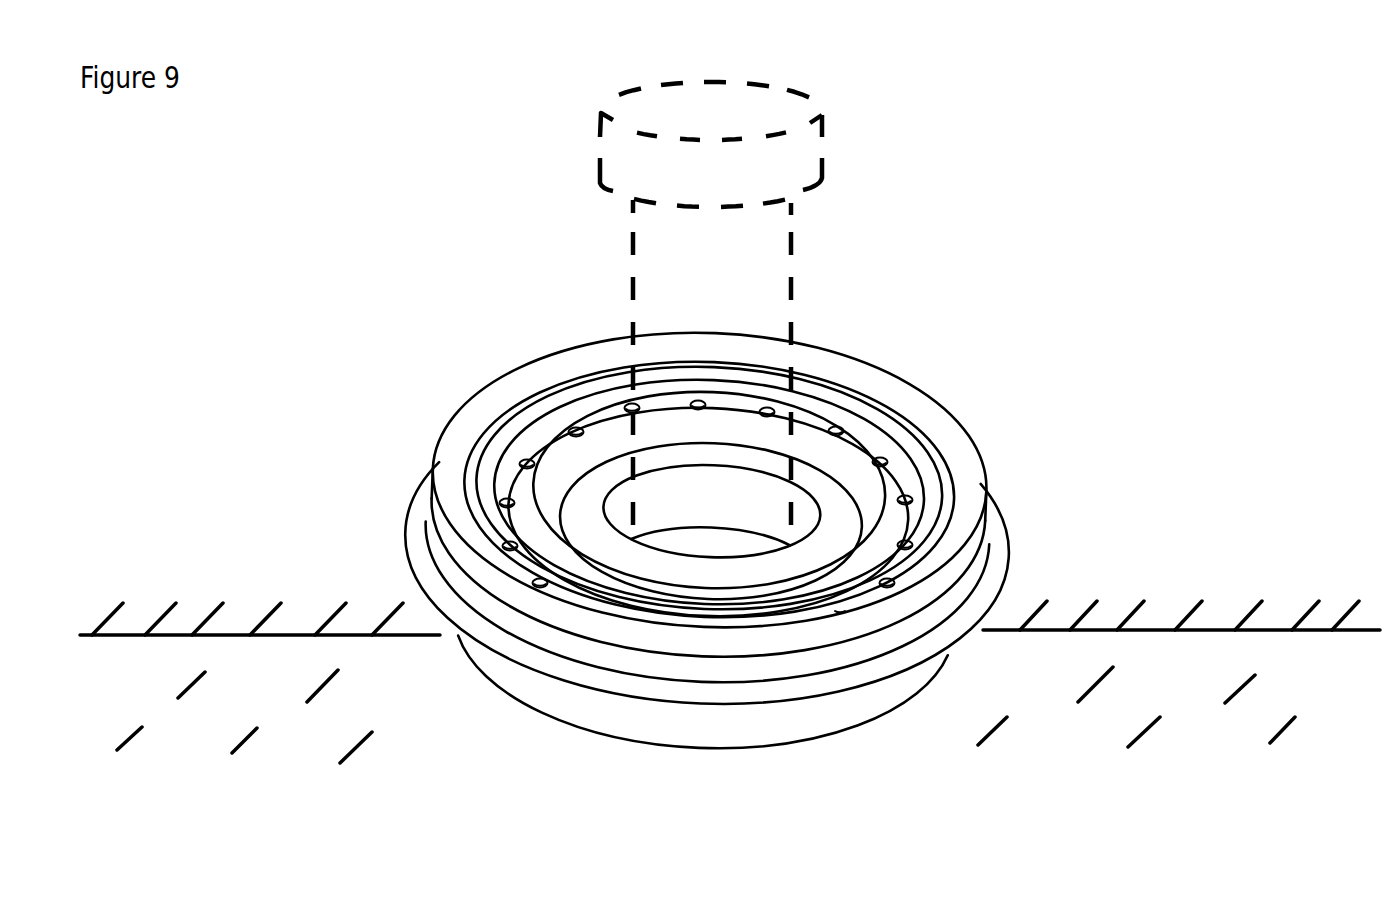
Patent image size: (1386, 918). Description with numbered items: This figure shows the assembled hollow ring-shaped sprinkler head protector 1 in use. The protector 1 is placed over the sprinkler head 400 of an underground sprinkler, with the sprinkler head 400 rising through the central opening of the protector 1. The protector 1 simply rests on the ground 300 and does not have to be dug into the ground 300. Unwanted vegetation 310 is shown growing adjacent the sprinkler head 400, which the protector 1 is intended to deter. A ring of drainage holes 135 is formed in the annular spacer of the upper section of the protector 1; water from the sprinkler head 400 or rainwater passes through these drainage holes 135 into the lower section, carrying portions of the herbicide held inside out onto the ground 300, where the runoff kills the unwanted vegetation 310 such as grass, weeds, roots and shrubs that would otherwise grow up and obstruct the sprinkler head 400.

The sprinkler head protector 1 is at (1090, 382).
The drainage holes 135 is at (843, 429).
The ground 300 is at (133, 634).
The vegetation 310 is at (330, 615).
The sprinkler head 400 is at (813, 117).